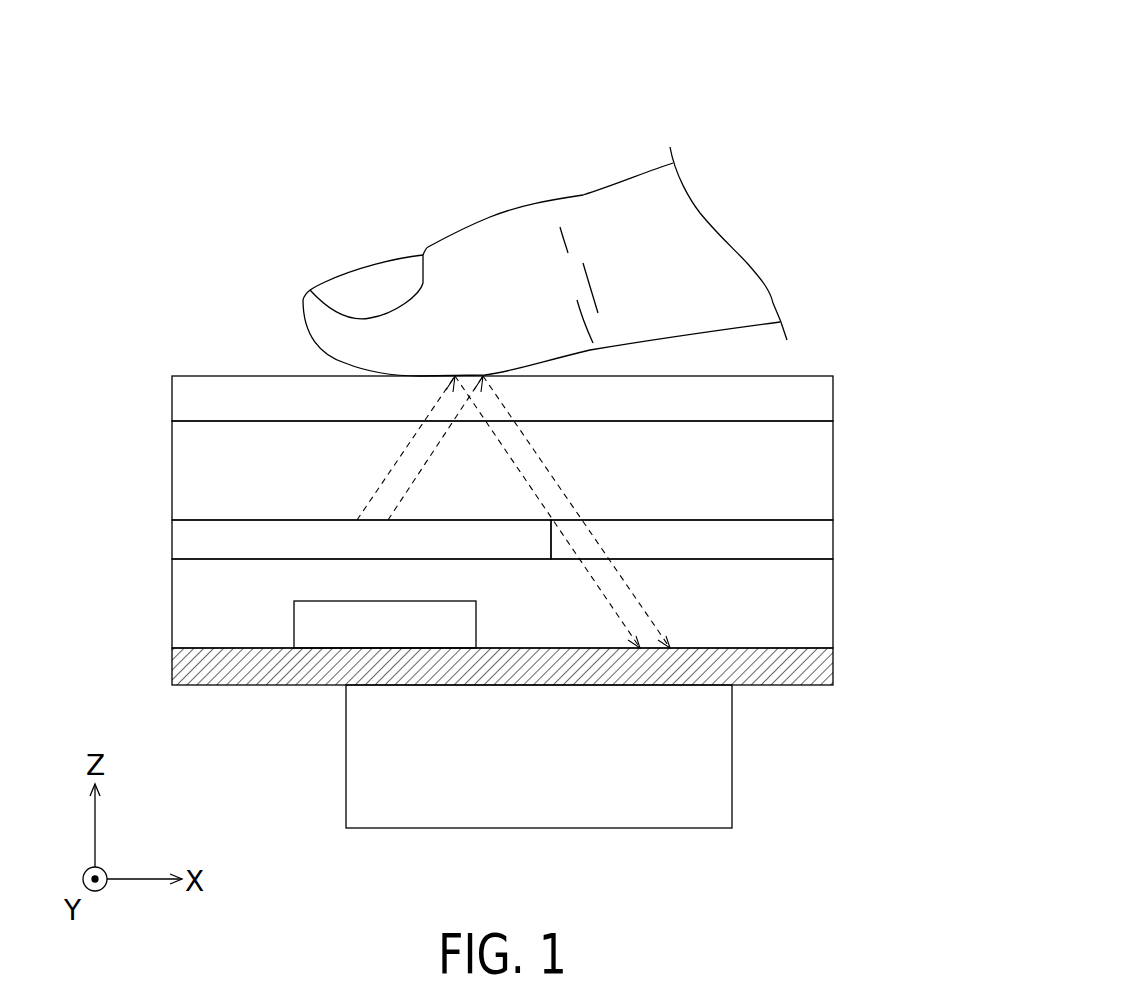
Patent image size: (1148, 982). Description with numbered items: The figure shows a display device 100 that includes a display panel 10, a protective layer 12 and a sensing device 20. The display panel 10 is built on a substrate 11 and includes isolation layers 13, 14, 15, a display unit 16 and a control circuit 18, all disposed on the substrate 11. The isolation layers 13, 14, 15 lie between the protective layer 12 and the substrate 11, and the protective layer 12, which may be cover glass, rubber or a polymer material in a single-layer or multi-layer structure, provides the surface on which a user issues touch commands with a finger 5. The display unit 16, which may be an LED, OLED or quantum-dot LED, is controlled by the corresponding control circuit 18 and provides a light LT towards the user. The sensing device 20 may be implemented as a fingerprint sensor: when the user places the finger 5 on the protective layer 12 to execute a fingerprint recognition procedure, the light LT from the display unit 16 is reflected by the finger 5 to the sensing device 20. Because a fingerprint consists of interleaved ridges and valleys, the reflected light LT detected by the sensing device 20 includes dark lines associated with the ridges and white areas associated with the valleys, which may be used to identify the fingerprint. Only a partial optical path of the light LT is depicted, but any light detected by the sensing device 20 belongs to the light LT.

The display device 100 is at (836, 66).
The finger 5 is at (668, 227).
The display panel 10 is at (167, 376).
The substrate 11 is at (820, 669).
The protective layer 12 is at (820, 404).
The isolation layer 13 is at (820, 469).
The isolation layer 14 is at (713, 556).
The isolation layer 15 is at (820, 592).
The display unit 16 is at (399, 556).
The control circuit 18 is at (399, 641).
The sensing device 20 is at (553, 773).
The light LT is at (543, 458).